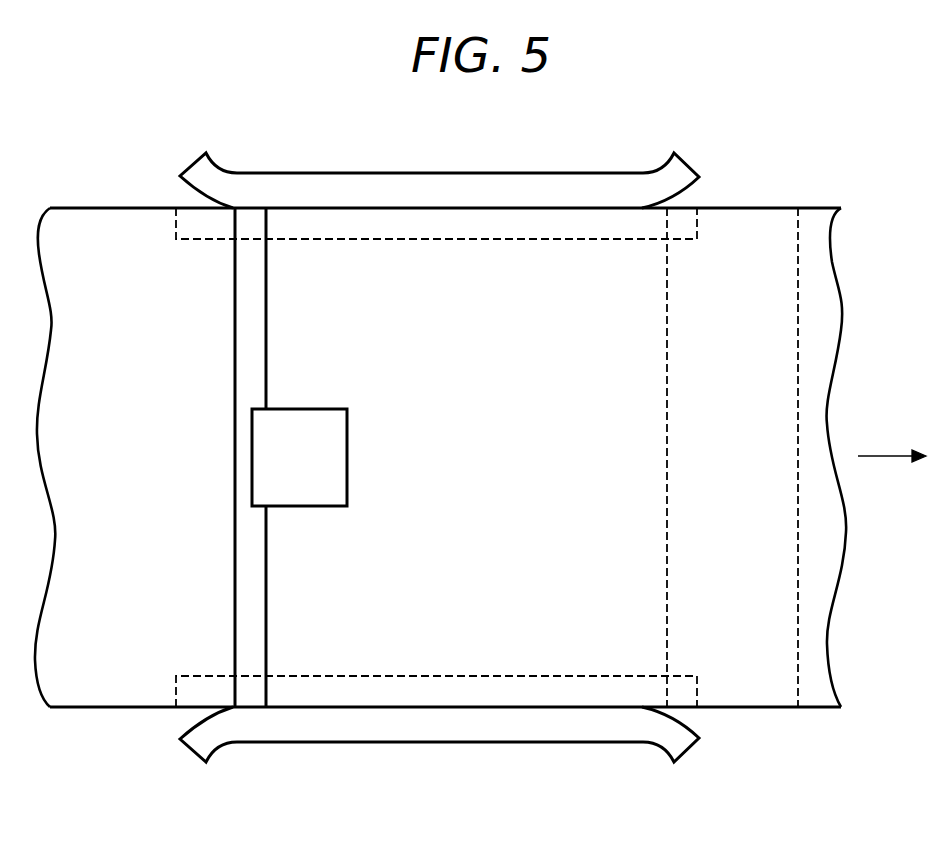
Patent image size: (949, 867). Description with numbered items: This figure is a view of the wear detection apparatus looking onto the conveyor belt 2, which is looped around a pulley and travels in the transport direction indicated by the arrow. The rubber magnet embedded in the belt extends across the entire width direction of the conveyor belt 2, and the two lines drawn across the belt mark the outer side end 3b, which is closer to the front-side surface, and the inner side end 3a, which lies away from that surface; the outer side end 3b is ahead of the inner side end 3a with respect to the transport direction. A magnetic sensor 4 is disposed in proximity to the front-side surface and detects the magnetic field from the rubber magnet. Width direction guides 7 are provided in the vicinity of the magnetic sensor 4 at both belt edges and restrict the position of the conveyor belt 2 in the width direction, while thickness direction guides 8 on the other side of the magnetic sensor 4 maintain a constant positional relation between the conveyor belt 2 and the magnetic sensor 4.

The conveyor belt 2 is at (737, 208).
The inner side end 3a is at (668, 592).
The outer side end 3b is at (234, 425).
The magnetic sensor 4 is at (312, 408).
The width direction guides 7 is at (478, 173).
The thickness direction guides 8 is at (385, 240).